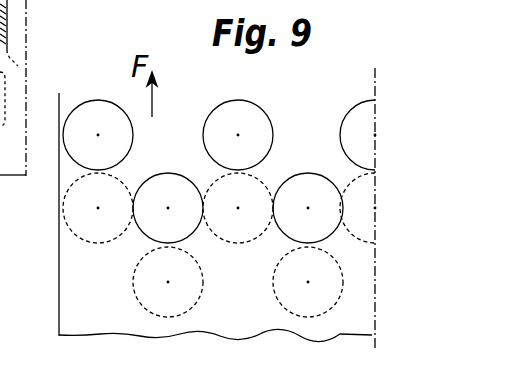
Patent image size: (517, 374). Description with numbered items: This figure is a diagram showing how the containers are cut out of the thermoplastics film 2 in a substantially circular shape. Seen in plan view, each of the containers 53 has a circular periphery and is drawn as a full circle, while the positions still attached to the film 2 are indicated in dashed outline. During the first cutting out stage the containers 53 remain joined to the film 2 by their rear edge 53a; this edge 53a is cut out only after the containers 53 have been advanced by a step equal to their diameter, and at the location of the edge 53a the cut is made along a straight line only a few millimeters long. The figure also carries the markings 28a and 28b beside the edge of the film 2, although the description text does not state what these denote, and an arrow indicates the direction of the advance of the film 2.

The thermoplastics film 2 is at (59, 320).
The plate surface portion 28a is at (55, 207).
The plate surface portion 28b is at (54, 149).
The container 53 is at (84, 99).
The rear edge 53a is at (97, 175).